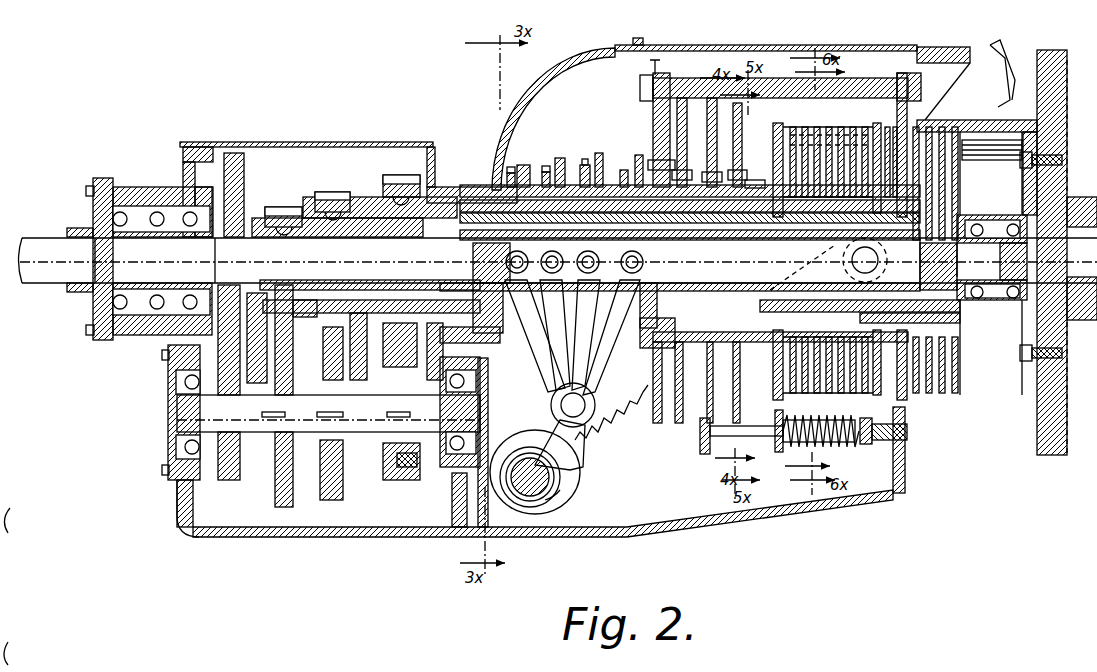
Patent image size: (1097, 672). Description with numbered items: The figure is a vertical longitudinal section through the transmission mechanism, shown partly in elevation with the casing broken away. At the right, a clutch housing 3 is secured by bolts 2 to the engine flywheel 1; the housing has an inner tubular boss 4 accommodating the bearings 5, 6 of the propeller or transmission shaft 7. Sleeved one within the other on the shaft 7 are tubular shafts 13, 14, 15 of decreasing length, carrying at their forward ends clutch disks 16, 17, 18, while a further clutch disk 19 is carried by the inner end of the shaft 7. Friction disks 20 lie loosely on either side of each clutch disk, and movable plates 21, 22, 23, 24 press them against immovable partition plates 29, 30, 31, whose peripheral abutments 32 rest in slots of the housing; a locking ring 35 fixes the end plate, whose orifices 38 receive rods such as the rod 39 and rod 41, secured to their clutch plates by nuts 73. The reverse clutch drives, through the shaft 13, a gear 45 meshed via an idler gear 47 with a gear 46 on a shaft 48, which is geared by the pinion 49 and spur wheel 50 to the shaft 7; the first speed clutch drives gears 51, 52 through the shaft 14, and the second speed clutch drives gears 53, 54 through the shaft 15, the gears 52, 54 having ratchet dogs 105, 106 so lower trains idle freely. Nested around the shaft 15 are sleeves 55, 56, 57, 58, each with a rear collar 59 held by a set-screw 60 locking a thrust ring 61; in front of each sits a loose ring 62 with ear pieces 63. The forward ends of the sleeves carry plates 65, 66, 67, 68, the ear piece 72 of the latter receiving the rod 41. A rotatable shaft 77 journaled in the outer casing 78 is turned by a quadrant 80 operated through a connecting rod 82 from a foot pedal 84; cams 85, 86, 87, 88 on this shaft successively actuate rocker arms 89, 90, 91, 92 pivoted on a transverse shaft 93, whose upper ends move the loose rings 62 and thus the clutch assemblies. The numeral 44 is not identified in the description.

The flywheel 1 is at (1058, 445).
The bolts 2 is at (1062, 160).
The clutch housing 3 is at (1000, 120).
The inner tubular boss 4 is at (1015, 175).
The bearing 5 is at (977, 300).
The bearing 6 is at (1010, 300).
The transmission shaft 7 is at (55, 268).
The tubular shaft 13 is at (308, 196).
The tubular shaft 14 is at (368, 215).
The tubular shaft 15 is at (440, 185).
The clutch disk 16 is at (890, 127).
The clutch disk 17 is at (855, 125).
The clutch disk 18 is at (822, 130).
The clutch disk 19 is at (970, 165).
The friction disks 20 is at (945, 430).
The clutch plate 21 is at (745, 342).
The clutch plate 22 is at (805, 447).
The clutch plate 23 is at (935, 127).
The clutch plate 24 is at (930, 410).
The immovable plate 29 is at (840, 447).
The immovable plate 30 is at (900, 442).
The immovable plate 31 is at (960, 370).
The peripheral abutments 32 is at (866, 447).
The locking ring 35 is at (712, 352).
The orifices 38 is at (756, 191).
The rod 39 is at (700, 436).
The rod 41 is at (695, 78).
The clutch post 44 is at (848, 120).
The gear 45 is at (275, 205).
The gear 46 is at (283, 505).
The idler gear 47 is at (262, 335).
The shaft 48 is at (168, 420).
The pinion 49 is at (236, 462).
The spur wheel 50 is at (238, 160).
The gear 51 is at (333, 192).
The gear 52 is at (343, 478).
The gear 53 is at (400, 176).
The gear 54 is at (408, 480).
The sleeve 55 is at (548, 166).
The sleeve 56 is at (587, 162).
The sleeve 57 is at (603, 170).
The sleeve 58 is at (640, 155).
The collar 59 is at (498, 175).
The set-screw 60 is at (512, 168).
The thrust ring 61 is at (525, 165).
The loose ring 62 is at (561, 158).
The ear pieces 63 is at (490, 268).
The plate 65 is at (740, 170).
The plate 66 is at (714, 162).
The plate 67 is at (684, 135).
The plate 68 is at (665, 110).
The ear piece 72 is at (655, 58).
The nuts 73 is at (921, 86).
The rotatable shaft 77 is at (535, 440).
The outer casing 78 is at (605, 537).
The quadrant 80 is at (612, 415).
The connecting rod 82 is at (828, 264).
The foot pedal 84 is at (1003, 62).
The cam 85 is at (491, 442).
The cam 86 is at (510, 498).
The cam 87 is at (560, 498).
The cam 88 is at (562, 472).
The rocker arm 89 is at (520, 300).
The rocker arm 90 is at (553, 330).
The rocker arm 91 is at (586, 320).
The rocker arm 92 is at (613, 323).
The transverse shaft 93 is at (592, 420).
The ratchet dog 105 is at (318, 470).
The ratchet dog 106 is at (397, 460).